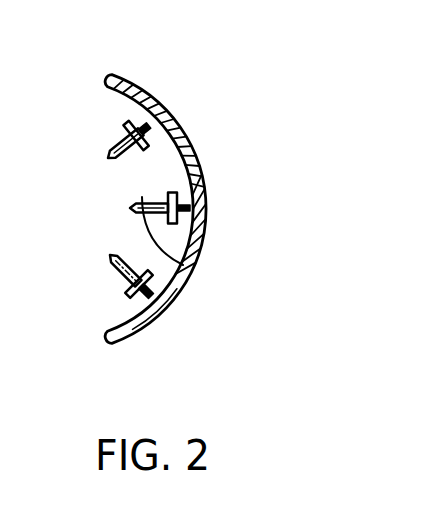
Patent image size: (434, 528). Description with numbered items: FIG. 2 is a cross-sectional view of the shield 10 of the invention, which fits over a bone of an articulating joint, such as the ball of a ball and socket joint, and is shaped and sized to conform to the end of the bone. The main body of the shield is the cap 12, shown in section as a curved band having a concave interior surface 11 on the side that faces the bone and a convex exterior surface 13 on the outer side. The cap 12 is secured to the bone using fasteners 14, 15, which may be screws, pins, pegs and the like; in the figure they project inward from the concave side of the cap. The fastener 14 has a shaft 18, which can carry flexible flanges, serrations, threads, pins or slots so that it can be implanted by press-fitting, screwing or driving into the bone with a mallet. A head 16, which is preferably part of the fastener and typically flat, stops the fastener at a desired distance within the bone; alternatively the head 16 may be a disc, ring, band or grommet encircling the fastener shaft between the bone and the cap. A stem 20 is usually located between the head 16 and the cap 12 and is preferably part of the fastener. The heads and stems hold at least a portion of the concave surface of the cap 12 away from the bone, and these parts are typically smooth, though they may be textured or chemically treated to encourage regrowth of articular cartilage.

The shield 10 is at (219, 340).
The concave interior surface 11 is at (132, 98).
The cap 12 is at (153, 194).
The convex exterior surface 13 is at (133, 83).
The fastener 14 is at (188, 270).
The fastener 15 is at (113, 253).
The head 16 is at (129, 292).
The shaft 18 is at (142, 197).
The stem 20 is at (130, 304).